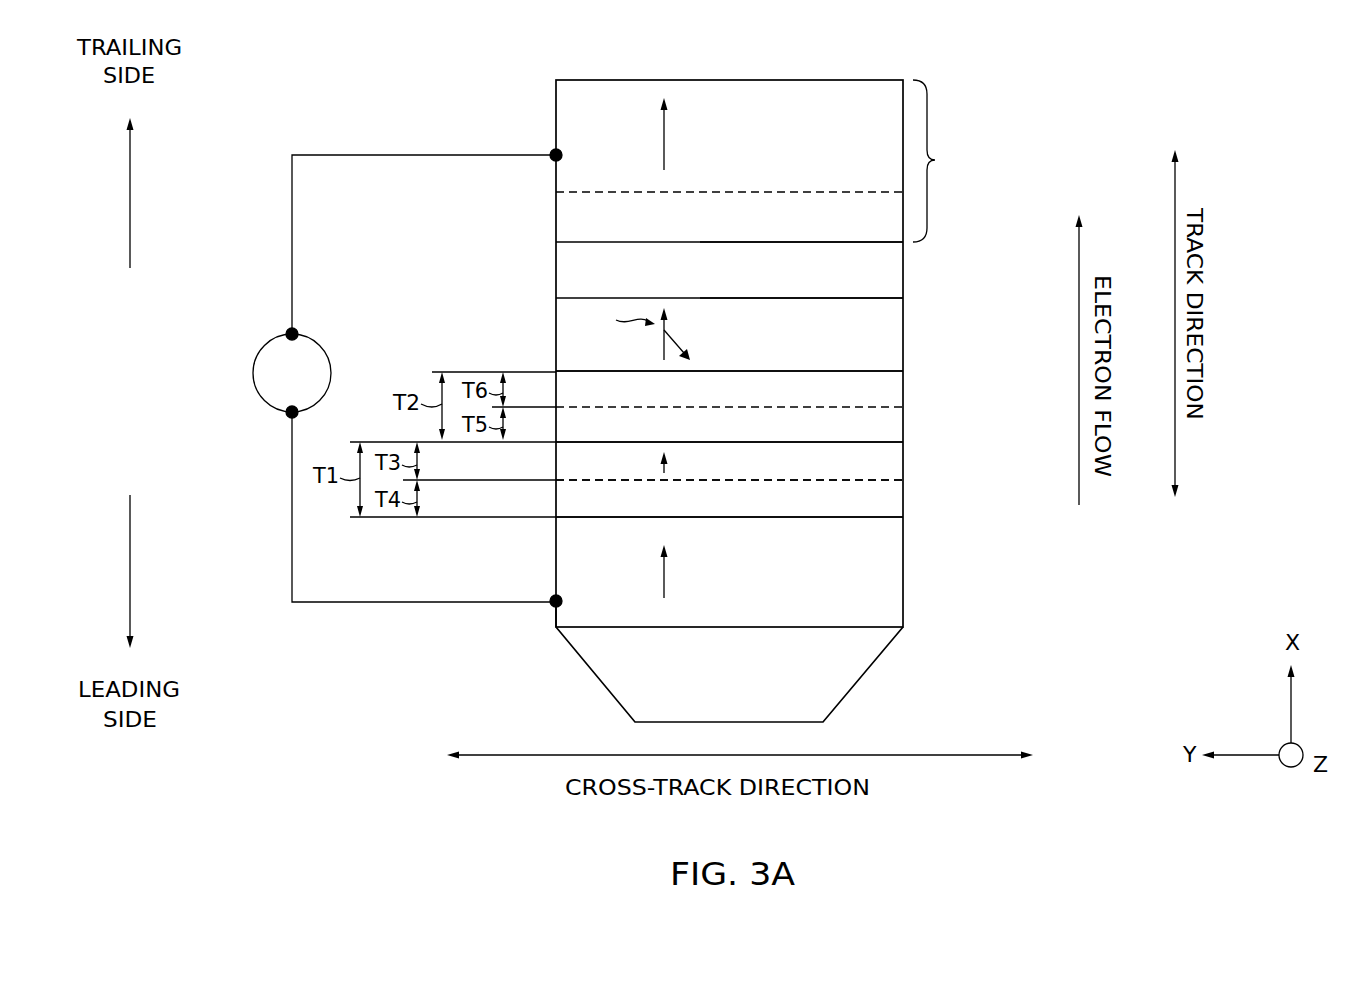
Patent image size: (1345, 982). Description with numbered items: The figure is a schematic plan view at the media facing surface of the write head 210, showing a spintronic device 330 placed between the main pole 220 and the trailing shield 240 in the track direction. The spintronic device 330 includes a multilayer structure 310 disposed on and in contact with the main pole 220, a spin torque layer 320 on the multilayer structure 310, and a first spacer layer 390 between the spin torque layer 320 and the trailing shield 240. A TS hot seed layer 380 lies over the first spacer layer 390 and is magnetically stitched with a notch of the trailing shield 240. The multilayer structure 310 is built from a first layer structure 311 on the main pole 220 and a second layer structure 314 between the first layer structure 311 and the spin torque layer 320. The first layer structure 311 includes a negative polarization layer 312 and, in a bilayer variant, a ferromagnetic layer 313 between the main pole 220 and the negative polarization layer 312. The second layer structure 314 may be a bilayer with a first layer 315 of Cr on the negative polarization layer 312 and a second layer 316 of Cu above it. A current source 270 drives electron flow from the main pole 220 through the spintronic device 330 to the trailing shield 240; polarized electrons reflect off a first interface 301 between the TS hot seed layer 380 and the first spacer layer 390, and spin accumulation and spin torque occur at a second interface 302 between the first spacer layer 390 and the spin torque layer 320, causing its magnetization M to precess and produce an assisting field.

The write head 210 is at (441, 685).
The main pole 220 is at (743, 673).
The trailing shield 240 is at (935, 160).
The current source 270 is at (257, 362).
The first interface 301 is at (862, 243).
The second interface 302 is at (887, 298).
The multilayer structure 310 is at (528, 492).
The first layer structure 311 is at (923, 480).
The negative polarization layer 312 is at (890, 462).
The ferromagnetic layer 313 is at (887, 500).
The second layer structure 314 is at (923, 407).
The first layer 315 is at (884, 428).
The second layer 316 is at (883, 388).
The spin torque layer 320 is at (875, 350).
The spintronic device 330 is at (526, 278).
The TS hot seed layer 380 is at (873, 228).
The first spacer layer 390 is at (873, 285).